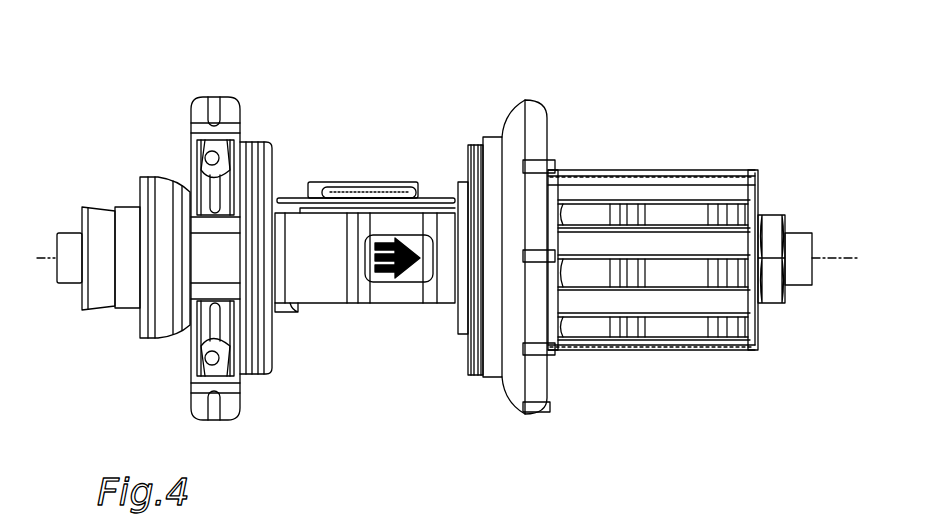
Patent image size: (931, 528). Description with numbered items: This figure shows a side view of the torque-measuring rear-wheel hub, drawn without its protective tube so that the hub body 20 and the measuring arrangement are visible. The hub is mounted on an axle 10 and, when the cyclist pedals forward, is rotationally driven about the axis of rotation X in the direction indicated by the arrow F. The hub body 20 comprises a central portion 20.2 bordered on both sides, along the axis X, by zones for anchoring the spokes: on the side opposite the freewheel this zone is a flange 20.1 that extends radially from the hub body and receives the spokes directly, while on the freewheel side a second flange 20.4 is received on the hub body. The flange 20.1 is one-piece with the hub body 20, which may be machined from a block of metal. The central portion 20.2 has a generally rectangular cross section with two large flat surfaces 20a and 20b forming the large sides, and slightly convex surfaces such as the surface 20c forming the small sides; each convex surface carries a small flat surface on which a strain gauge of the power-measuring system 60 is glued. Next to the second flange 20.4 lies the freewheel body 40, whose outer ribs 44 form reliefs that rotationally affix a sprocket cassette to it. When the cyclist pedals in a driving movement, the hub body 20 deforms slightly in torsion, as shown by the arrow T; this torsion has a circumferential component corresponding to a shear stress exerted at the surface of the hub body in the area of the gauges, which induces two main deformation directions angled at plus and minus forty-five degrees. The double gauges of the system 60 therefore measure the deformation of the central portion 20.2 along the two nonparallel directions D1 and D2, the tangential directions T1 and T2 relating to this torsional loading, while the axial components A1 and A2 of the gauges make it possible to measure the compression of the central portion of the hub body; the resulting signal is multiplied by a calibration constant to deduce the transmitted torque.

The axle 10 is at (73, 237).
The hub body 20 is at (373, 262).
The flange 20.1 is at (225, 98).
The central portion 20.2 is at (376, 272).
The second flange 20.4 is at (503, 140).
The large flat surface 20a is at (427, 202).
The large flat surface 20b is at (315, 302).
The slightly convex surface 20c is at (292, 200).
The freewheel body 40 is at (665, 243).
The outer ribs 44 is at (727, 305).
The power-measuring system 60 is at (355, 160).
The axis of rotation X is at (447, 250).
The arrow (direction of rotation) F is at (640, 362).
The axial direction A is at (295, 252).
The torsion arrow T is at (295, 252).
The first tangential direction T1 is at (418, 277).
The second tangential direction T2 is at (418, 240).
The axial component A1 is at (420, 266).
The axial component A2 is at (420, 253).
The deformation direction D1 is at (420, 272).
The deformation direction D2 is at (420, 243).